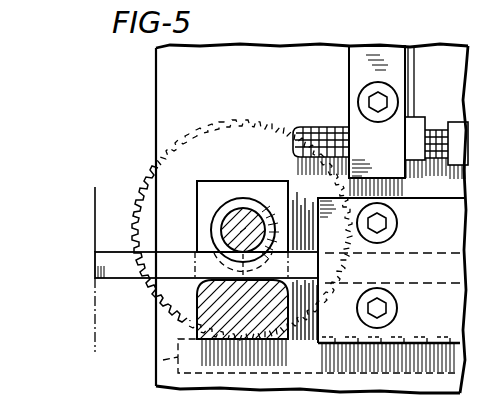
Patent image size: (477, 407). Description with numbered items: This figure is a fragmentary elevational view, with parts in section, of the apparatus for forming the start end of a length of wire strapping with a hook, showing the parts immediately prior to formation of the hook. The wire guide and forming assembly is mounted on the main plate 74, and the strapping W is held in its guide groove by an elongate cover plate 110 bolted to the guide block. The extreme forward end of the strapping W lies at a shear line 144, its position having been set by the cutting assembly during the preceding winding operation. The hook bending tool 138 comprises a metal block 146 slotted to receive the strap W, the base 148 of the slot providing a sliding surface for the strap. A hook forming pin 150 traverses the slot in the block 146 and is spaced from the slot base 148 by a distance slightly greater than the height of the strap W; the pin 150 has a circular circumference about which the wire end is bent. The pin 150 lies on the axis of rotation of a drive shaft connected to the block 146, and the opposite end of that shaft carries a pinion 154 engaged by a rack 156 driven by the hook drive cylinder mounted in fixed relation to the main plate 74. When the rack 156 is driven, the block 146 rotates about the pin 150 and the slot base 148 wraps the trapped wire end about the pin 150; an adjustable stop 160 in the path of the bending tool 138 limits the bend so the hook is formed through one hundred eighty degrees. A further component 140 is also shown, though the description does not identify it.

The main plate 74 is at (165, 63).
The gear 140 is at (150, 160).
The pinion 154 is at (143, 190).
The shear line 144 is at (95, 215).
The hook bending tool 138 is at (197, 203).
The metal block 146 is at (248, 181).
The adjustable stop 160 is at (312, 128).
The hook forming pin 150 is at (225, 232).
The strapping W is at (97, 268).
The slot base 148 is at (205, 313).
The rack 156 is at (162, 363).
The cover plate 110 is at (428, 313).